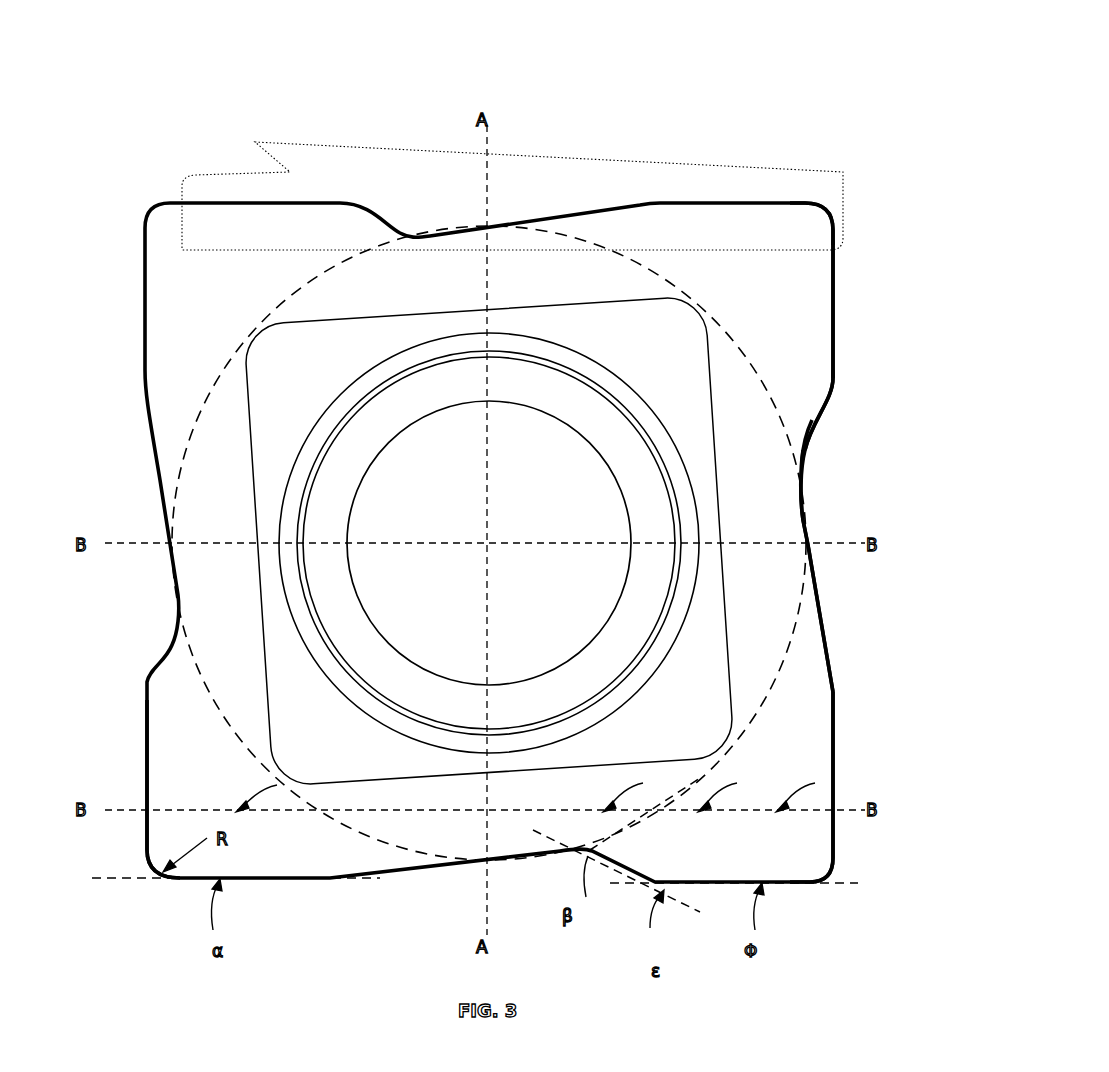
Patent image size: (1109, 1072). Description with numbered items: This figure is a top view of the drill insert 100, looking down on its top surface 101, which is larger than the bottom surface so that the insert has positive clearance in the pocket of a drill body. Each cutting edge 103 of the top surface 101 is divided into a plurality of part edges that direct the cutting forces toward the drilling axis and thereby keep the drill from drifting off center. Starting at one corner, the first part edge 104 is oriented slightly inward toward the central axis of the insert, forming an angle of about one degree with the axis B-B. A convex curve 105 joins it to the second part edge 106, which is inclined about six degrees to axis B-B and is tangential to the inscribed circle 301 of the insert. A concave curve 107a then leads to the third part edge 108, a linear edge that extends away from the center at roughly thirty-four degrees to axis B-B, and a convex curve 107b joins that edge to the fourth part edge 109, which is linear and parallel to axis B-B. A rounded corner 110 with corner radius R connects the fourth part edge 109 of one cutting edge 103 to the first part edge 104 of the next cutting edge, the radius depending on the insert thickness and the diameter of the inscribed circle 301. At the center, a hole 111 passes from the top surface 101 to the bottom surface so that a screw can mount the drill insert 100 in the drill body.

The drill insert 100 is at (673, 140).
The top surface 101 is at (187, 745).
The cutting edge 103 is at (512, 191).
The first part edge 104 is at (834, 795).
The convex curve 105 is at (834, 695).
The second part edge 106 is at (822, 610).
The concave curve 107a is at (802, 478).
The convex curve 107b is at (835, 390).
The third part edge 108 is at (820, 424).
The fourth part edge 109 is at (837, 297).
The corner 110 is at (822, 215).
The hole 111 is at (437, 467).
The inscribed circle 301 is at (290, 302).